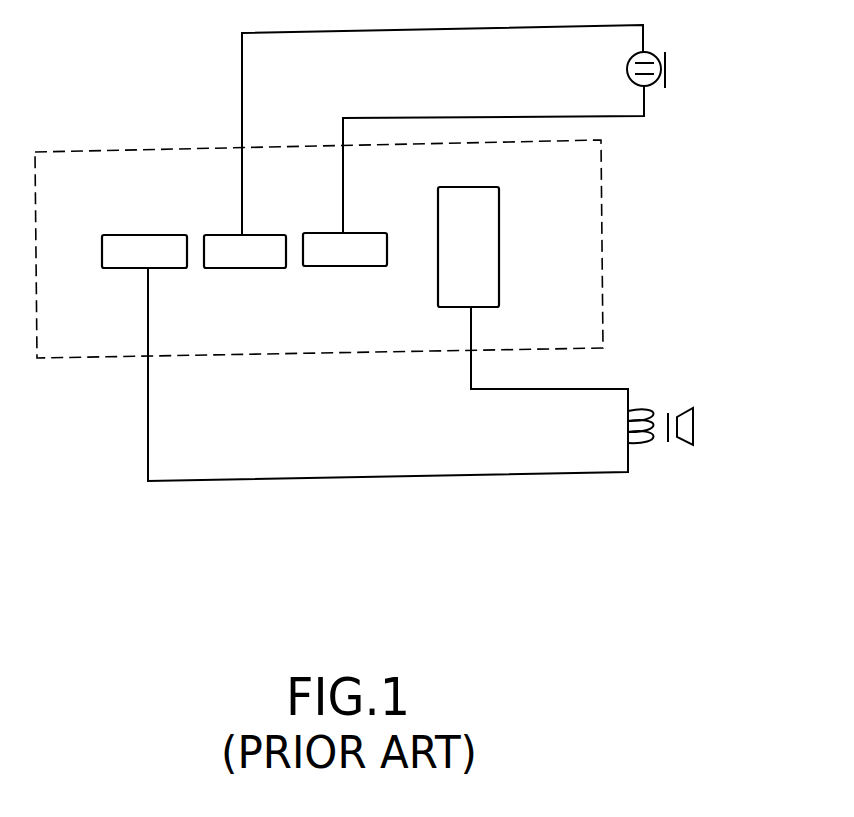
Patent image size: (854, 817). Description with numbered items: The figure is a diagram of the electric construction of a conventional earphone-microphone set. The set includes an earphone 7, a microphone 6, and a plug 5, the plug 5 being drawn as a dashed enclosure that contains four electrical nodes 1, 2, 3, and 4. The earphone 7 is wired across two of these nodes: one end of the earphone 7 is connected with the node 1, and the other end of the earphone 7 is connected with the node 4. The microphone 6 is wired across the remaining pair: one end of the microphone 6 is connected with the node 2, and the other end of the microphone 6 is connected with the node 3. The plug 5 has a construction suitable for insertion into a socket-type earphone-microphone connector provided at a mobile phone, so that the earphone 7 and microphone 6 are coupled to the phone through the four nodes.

The electrical node 1 is at (126, 235).
The electrical node 2 is at (266, 268).
The electrical node 3 is at (367, 266).
The electrical node 4 is at (499, 245).
The plug 5 is at (603, 171).
The microphone 6 is at (676, 70).
The earphone 7 is at (700, 426).